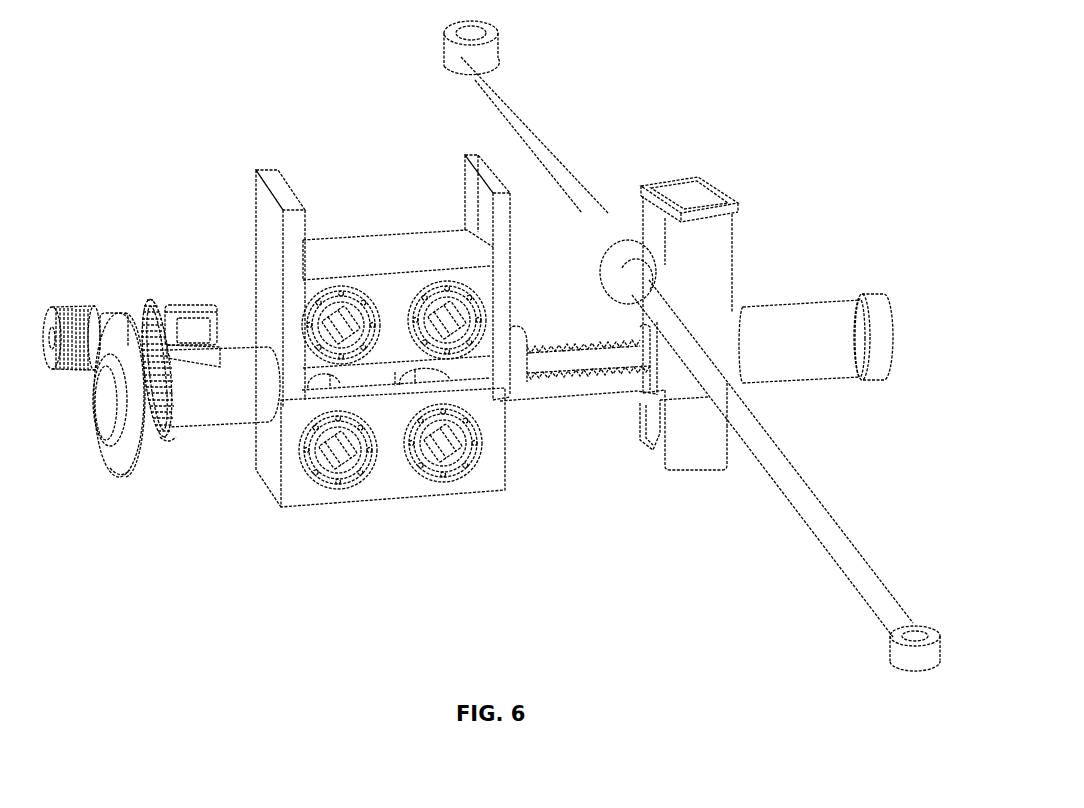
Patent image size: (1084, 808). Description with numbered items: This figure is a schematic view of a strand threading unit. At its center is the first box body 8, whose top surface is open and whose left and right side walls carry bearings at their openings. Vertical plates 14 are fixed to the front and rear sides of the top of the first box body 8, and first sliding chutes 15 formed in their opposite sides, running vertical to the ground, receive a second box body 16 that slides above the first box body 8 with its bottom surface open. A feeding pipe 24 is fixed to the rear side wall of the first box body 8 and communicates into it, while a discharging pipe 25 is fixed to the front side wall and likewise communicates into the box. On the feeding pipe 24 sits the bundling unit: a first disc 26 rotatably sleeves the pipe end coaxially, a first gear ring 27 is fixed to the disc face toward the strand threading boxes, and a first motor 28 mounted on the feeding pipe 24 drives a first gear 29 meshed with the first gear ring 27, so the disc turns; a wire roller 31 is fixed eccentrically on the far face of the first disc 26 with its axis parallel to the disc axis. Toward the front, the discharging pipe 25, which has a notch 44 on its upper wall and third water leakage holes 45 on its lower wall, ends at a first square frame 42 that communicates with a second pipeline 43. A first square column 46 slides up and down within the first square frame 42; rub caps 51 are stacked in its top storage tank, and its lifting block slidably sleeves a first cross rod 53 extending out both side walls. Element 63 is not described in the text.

The first box body 8 is at (393, 485).
The vertical plates 14 is at (270, 245).
The first sliding chutes 15 is at (485, 215).
The second box body 16 is at (402, 250).
The feeding pipe 24 is at (213, 400).
The discharging pipe 25 is at (553, 397).
The first disc 26 is at (128, 323).
The first gear ring 27 is at (170, 440).
The first motor 28 is at (193, 323).
The first gear 29 is at (153, 303).
The wire roller 31 is at (80, 305).
The first square frame 42 is at (728, 338).
The second pipeline 43 is at (803, 353).
The notch 44 is at (590, 337).
The third water leakage holes 45 is at (572, 397).
The first square column 46 is at (718, 253).
The rub caps 51 is at (688, 198).
The first cross rod 53 is at (552, 158).
The flat portion 63 is at (122, 467).